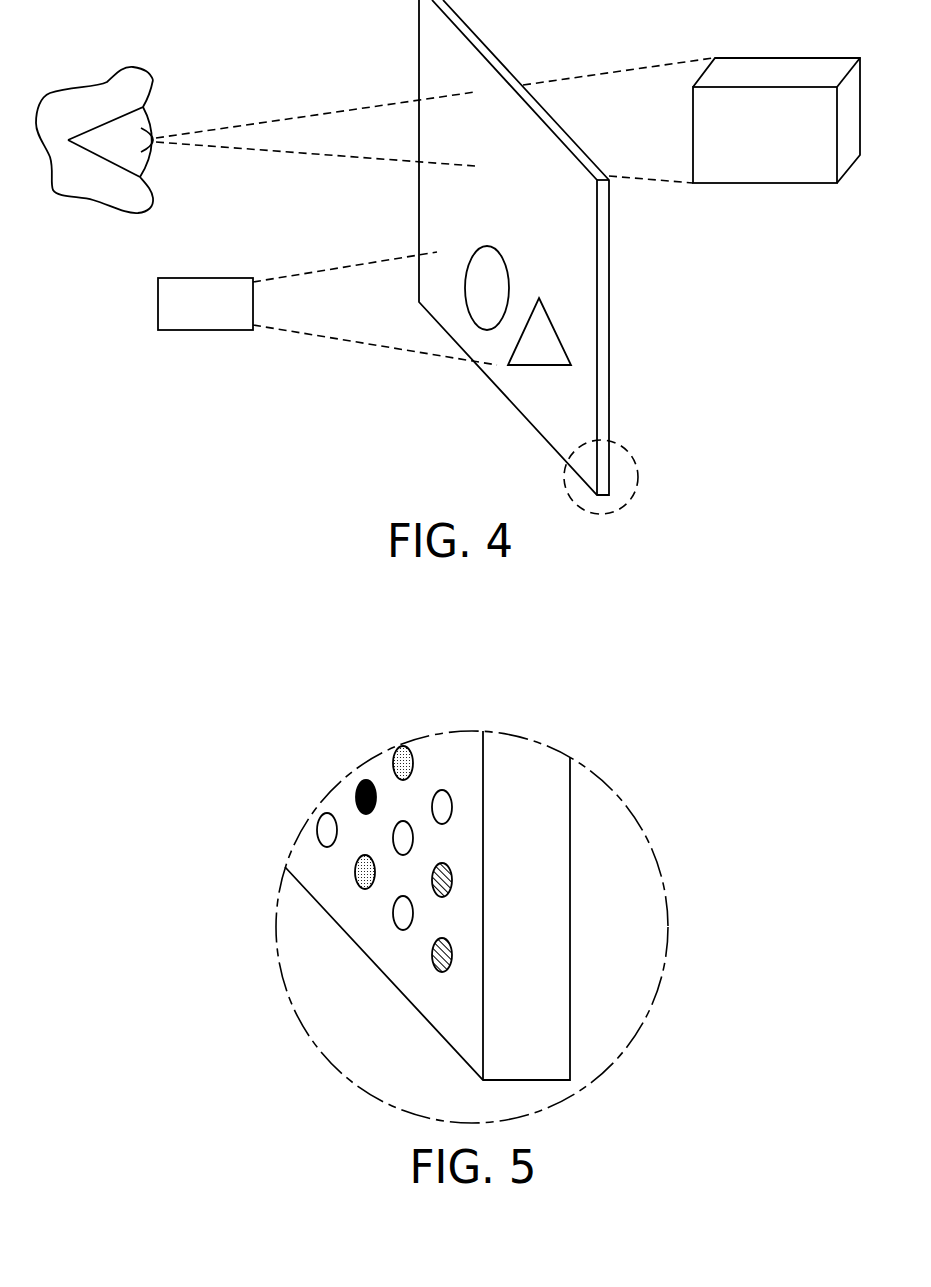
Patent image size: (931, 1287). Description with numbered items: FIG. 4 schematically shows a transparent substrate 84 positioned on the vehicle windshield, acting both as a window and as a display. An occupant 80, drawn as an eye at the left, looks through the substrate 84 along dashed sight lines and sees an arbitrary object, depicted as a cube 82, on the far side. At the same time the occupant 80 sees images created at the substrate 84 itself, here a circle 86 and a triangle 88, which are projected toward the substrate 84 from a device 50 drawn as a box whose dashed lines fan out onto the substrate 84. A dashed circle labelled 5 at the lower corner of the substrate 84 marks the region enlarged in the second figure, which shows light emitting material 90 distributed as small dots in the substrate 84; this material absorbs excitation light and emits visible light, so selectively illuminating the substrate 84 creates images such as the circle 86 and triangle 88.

In FIG. 4, the occupant 80 is at (123, 87).
In FIG. 4, the cube 82 is at (750, 148).
In FIG. 4, the projector / image source 50 is at (190, 317).
In FIG. 4, the substrate 84 is at (478, 43).
In FIG. 5, the substrate 84 is at (527, 778).
In FIG. 4, the circle 86 is at (480, 286).
In FIG. 4, the triangle 88 is at (539, 357).
In FIG. 4, the detail view circle for FIG. 5 is at (627, 448).
In FIG. 5, the light emitting material 90 is at (400, 763).